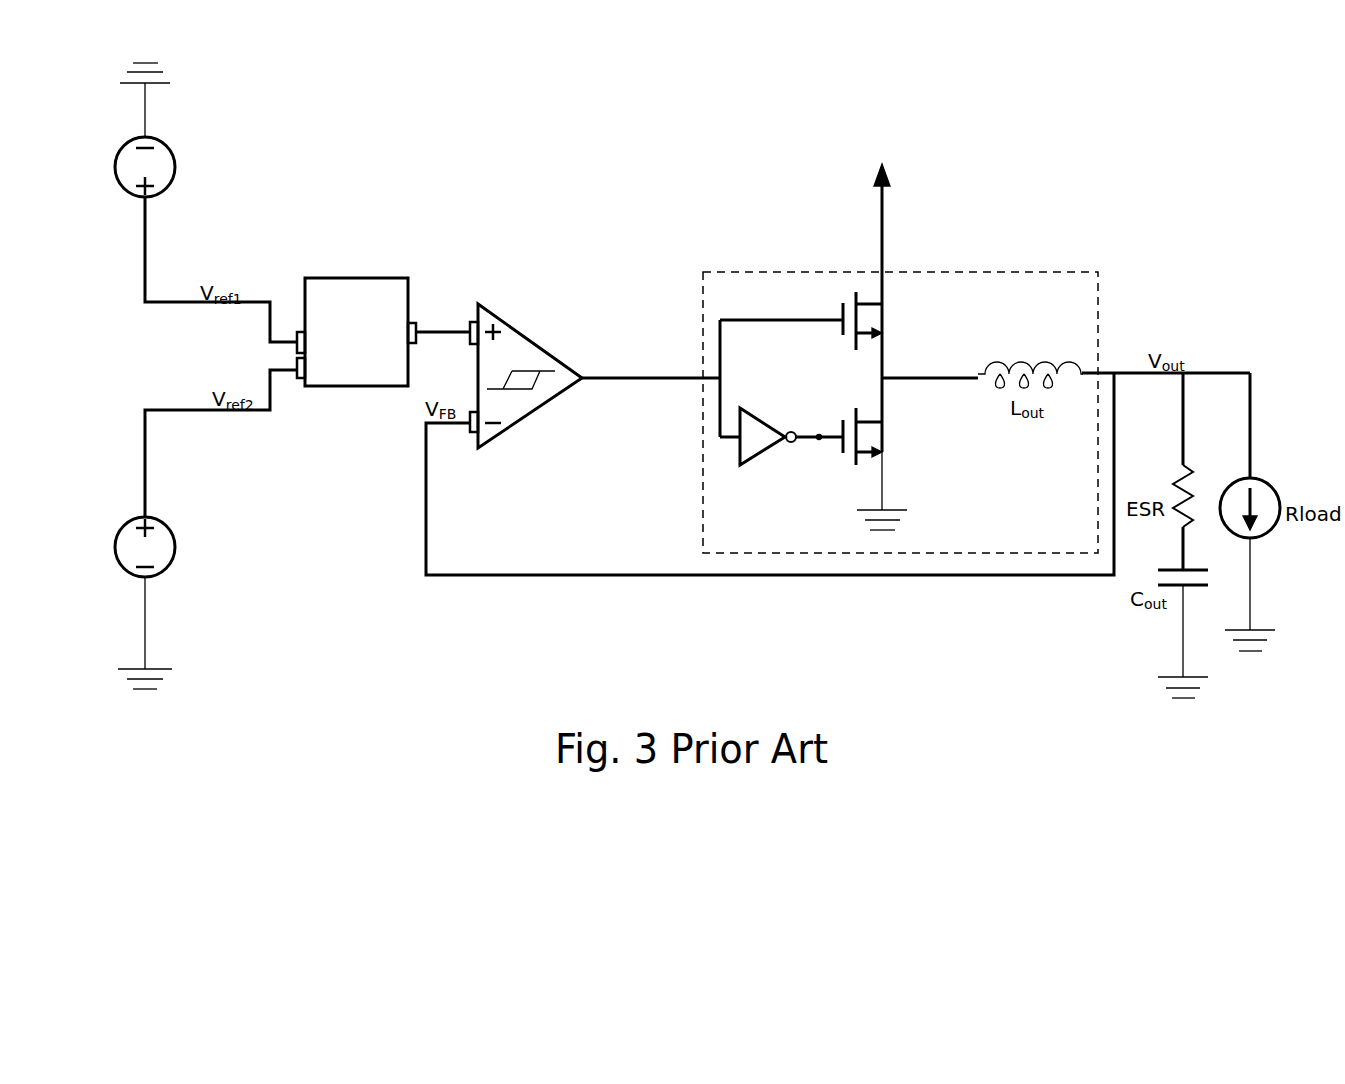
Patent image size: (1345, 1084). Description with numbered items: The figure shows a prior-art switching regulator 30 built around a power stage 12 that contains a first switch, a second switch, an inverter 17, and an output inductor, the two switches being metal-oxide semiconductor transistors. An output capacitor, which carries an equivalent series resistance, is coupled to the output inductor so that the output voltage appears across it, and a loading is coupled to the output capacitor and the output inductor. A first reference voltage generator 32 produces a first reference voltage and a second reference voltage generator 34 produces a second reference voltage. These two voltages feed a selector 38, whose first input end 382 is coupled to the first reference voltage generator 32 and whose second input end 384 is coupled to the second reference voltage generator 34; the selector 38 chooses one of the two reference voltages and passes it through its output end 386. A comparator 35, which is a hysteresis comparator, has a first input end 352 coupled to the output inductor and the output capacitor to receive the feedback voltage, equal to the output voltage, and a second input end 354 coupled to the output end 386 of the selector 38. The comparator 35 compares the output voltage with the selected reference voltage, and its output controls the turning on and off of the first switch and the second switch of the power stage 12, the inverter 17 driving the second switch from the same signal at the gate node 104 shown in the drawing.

The switching regulator 30 is at (1118, 162).
The first reference voltage generator 32 is at (176, 167).
The second reference voltage generator 34 is at (176, 547).
The selector 38 is at (352, 359).
The first input end 382 is at (296, 331).
The second input end 384 is at (300, 380).
The output end 386 is at (415, 323).
The comparator 35 is at (517, 380).
The second input end 354 is at (474, 322).
The first input end 352 is at (476, 434).
The power stage 12 is at (929, 358).
The inverter 17 is at (765, 452).
The gate control node 104 is at (819, 441).